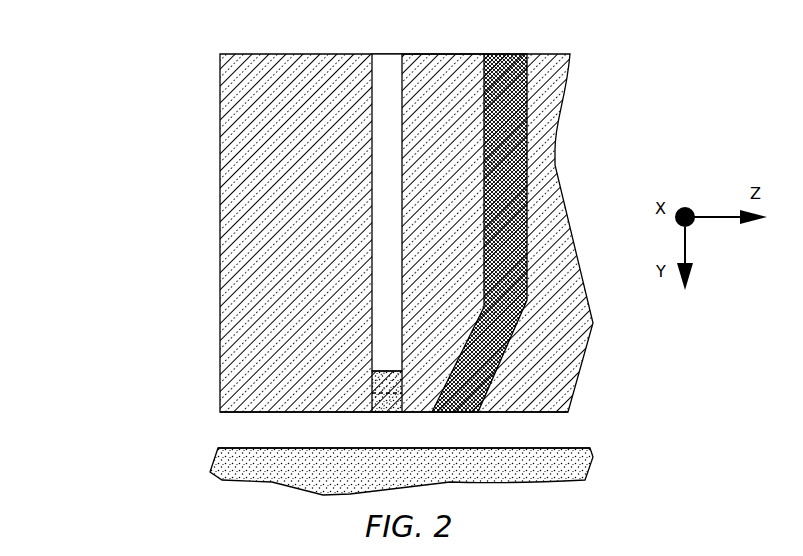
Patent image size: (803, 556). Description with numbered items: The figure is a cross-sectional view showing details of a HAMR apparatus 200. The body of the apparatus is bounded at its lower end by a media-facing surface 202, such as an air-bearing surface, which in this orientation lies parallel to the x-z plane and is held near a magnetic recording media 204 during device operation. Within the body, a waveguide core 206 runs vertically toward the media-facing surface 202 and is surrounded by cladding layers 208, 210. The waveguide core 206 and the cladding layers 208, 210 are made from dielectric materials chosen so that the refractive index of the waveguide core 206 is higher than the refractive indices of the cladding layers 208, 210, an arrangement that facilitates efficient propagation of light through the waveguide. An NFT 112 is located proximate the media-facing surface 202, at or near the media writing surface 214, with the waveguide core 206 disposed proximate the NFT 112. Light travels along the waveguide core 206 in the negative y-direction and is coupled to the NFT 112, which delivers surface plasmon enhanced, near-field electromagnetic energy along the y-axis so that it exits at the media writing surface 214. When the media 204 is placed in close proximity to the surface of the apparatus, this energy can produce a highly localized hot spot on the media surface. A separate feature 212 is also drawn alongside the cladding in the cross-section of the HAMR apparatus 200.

The HAMR apparatus 200 is at (128, 48).
The media-facing surface 202 is at (238, 413).
The magnetic recording media 204 is at (590, 447).
The waveguide core 206 is at (393, 207).
The cladding layer 208 is at (220, 84).
The cladding layer 210 is at (435, 53).
The channel 212 is at (502, 53).
The media writing surface 214 is at (542, 447).
The NFT 112 is at (386, 413).